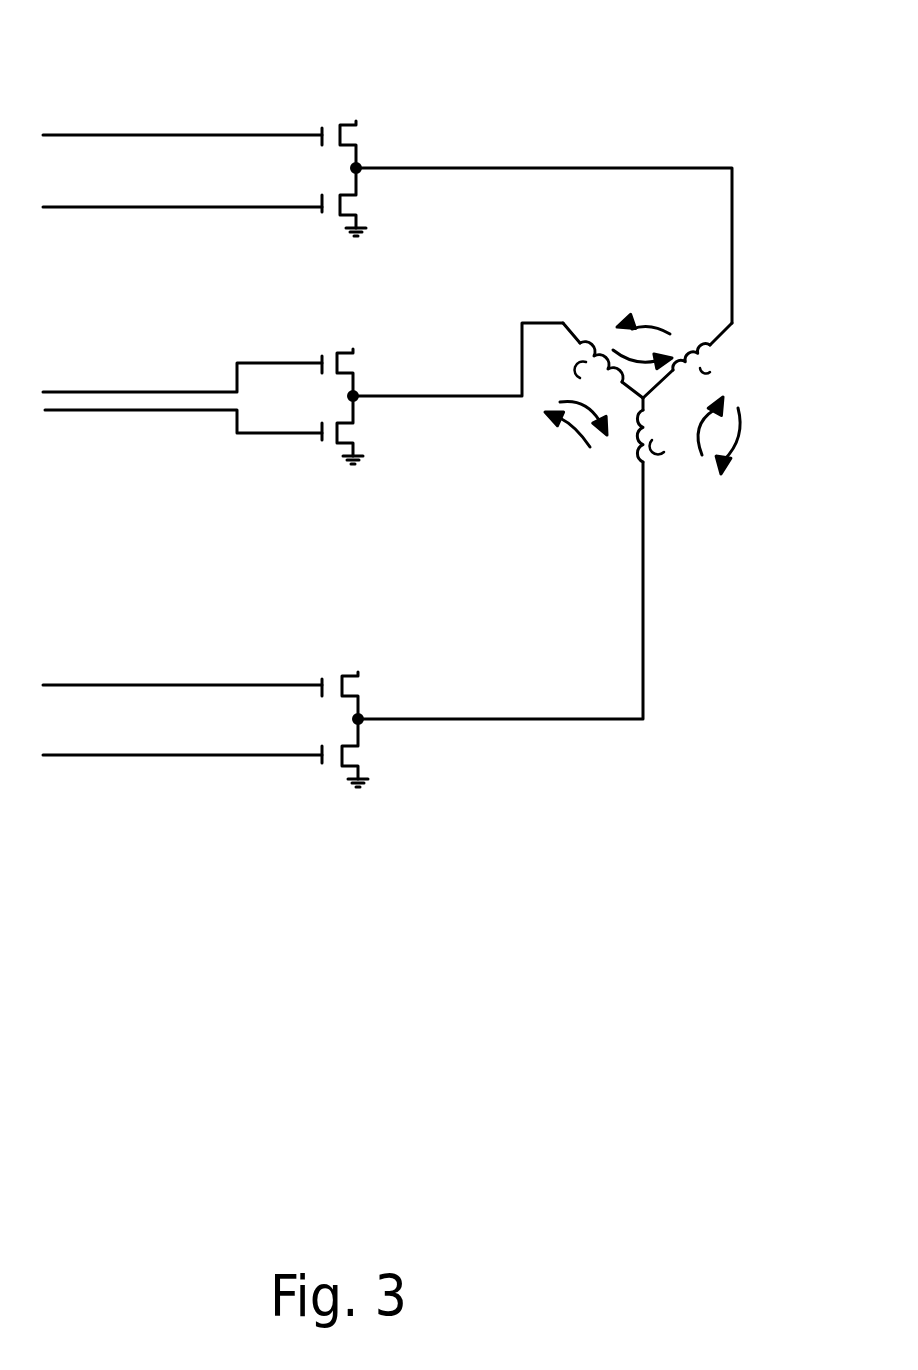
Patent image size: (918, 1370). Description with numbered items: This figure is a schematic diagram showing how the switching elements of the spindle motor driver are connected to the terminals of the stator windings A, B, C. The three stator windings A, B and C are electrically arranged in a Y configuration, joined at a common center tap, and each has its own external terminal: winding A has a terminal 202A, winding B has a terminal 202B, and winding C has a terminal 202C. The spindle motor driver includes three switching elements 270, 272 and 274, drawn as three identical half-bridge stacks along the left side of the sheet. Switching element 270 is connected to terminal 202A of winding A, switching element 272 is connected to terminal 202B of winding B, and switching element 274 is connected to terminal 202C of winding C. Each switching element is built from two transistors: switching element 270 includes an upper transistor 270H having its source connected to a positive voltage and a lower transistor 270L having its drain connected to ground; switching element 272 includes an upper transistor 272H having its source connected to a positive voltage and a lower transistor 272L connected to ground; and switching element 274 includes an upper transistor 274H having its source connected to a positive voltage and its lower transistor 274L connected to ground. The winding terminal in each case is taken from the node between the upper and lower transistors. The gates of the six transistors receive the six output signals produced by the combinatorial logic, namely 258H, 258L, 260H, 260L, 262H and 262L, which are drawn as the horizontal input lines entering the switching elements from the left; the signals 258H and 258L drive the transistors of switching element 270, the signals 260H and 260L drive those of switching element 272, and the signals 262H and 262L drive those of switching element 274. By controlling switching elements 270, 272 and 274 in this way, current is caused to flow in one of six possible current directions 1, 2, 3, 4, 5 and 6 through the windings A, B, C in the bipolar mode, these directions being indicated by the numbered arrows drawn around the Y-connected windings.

The switching element 270 is at (411, 152).
The upper transistor 270H is at (356, 122).
The lower transistor 270L is at (342, 226).
The switching element 272 is at (440, 380).
The upper transistor 272H is at (353, 350).
The lower transistor 272L is at (342, 446).
The switching element 274 is at (427, 720).
The upper transistor 274H is at (358, 672).
The lower transistor 274L is at (347, 768).
The output signal 258H is at (190, 137).
The output signal 258L is at (185, 209).
The output signal 260H is at (162, 371).
The output signal 260L is at (162, 413).
The output signal 262H is at (223, 661).
The output signal 262L is at (188, 758).
The terminal 202A is at (570, 143).
The terminal 202B is at (453, 370).
The terminal 202C is at (583, 723).
The stator winding A is at (687, 360).
The stator winding B is at (603, 363).
The stator winding C is at (662, 430).
The current direction 1 is at (591, 432).
The current direction 2 is at (650, 351).
The current direction 3 is at (722, 414).
The current direction 4 is at (560, 420).
The current direction 5 is at (636, 316).
The current direction 6 is at (726, 457).